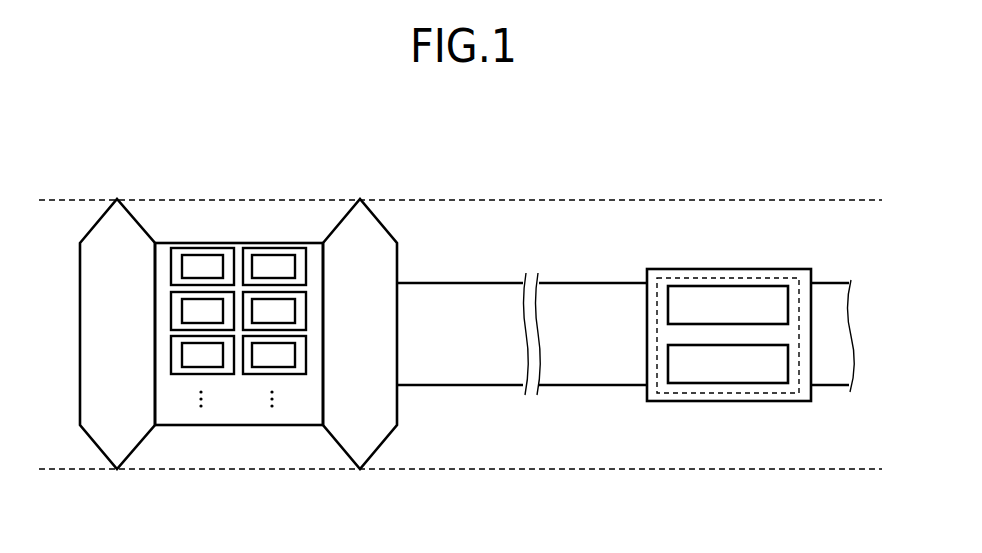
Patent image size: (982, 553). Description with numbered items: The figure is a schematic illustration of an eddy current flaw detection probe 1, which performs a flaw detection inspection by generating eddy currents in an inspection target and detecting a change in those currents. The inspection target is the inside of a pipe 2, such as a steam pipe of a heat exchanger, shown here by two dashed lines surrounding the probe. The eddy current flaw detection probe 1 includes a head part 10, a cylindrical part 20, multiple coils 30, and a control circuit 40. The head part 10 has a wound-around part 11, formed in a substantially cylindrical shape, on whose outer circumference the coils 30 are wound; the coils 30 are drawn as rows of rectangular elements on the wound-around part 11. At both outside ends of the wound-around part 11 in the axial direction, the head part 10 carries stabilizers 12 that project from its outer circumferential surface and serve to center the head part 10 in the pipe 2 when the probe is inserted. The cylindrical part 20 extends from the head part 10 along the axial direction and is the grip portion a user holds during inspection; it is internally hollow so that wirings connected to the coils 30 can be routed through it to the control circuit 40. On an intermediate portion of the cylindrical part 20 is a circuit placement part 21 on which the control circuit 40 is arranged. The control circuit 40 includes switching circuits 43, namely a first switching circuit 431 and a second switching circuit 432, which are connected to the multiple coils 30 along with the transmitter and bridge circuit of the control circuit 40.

The eddy current flaw detection probe 1 is at (780, 156).
The pipe 2 is at (399, 200).
The head part 10 is at (408, 220).
The wound-around part 11 is at (315, 255).
The stabilizer 12 is at (106, 228).
The cylindrical part 20 is at (593, 325).
The circuit placement part 21 is at (832, 265).
The coil 30 is at (220, 345).
The control circuit 40 is at (680, 277).
The switching circuit 43 is at (746, 333).
The first switching circuit 431 is at (715, 300).
The second switching circuit 432 is at (715, 364).